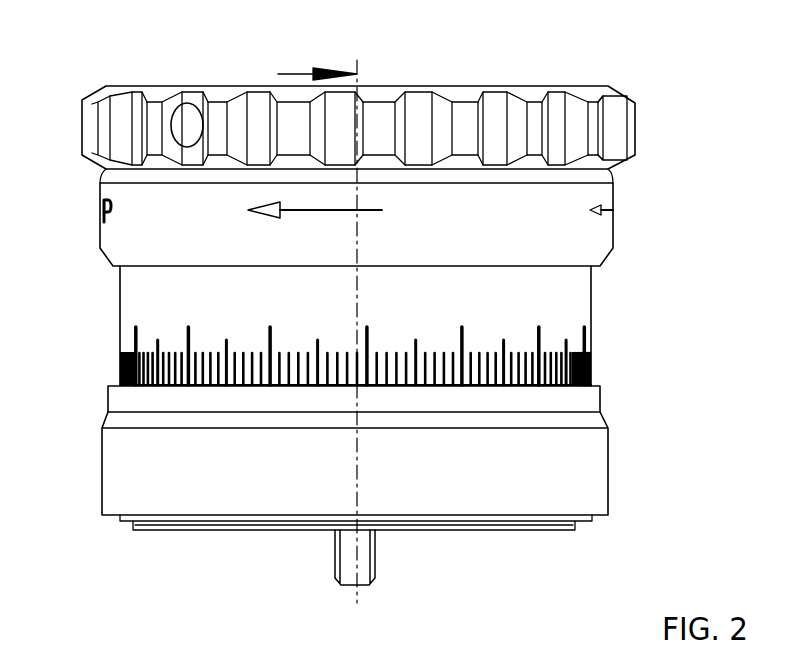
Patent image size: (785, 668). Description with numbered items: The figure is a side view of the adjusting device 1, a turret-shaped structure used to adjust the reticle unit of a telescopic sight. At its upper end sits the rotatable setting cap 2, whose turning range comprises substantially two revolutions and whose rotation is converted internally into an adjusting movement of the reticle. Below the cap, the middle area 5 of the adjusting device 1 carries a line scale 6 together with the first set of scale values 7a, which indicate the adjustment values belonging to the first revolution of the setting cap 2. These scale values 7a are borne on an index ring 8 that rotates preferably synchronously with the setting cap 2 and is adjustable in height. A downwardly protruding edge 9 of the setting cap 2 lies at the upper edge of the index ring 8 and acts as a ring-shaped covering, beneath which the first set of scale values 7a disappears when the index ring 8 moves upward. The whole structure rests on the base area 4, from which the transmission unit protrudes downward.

The adjusting device 1 is at (137, 63).
The setting cap 2 is at (505, 87).
The base area 4 is at (532, 493).
The middle area 5 is at (663, 323).
The line scale 6 is at (592, 368).
The first set of scale values 7a is at (470, 303).
The index ring 8 is at (160, 320).
The downwardly protruding edge 9 is at (113, 265).